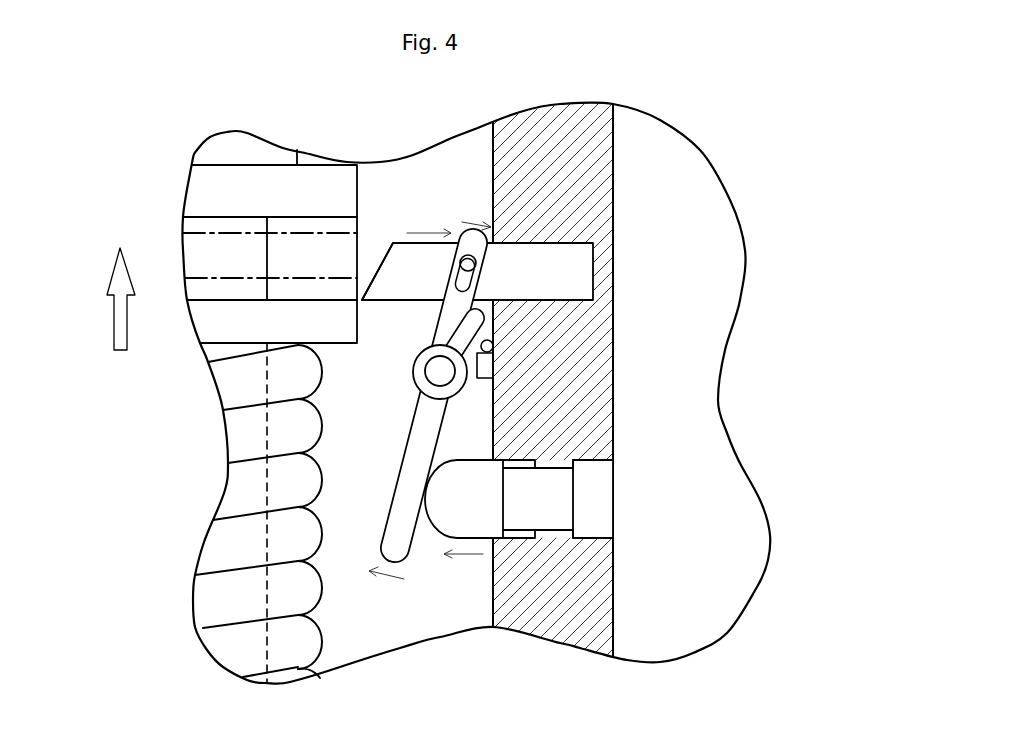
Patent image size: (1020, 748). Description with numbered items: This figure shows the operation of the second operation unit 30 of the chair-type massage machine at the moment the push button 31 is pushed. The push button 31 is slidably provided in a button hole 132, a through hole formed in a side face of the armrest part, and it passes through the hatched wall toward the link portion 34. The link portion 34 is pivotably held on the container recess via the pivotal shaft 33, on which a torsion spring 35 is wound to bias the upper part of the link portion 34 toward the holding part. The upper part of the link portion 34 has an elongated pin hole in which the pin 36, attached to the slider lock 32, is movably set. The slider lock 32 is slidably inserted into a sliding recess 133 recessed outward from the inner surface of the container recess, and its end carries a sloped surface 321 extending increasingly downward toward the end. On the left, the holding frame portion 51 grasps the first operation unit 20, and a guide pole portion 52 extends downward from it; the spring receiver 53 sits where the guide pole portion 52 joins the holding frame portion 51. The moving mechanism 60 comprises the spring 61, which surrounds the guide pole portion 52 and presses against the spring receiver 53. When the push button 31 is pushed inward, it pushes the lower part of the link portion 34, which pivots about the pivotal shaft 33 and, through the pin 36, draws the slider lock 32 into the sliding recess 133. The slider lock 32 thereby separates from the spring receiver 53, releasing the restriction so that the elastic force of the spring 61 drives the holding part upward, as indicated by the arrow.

The first operation unit 20 is at (225, 152).
The holding frame portion 51 is at (215, 200).
The spring receiver 53 is at (227, 270).
The guide pole portion 52 is at (268, 630).
The moving mechanism 60 is at (233, 475).
The spring 61 is at (215, 597).
The second operation unit 30 is at (412, 355).
The sloped surface 321 is at (376, 272).
The slider lock 32 is at (516, 239).
The pivotal shaft 33 is at (435, 370).
The link portion 34 is at (412, 452).
The torsion spring 35 is at (425, 385).
The pin 36 is at (460, 268).
The sliding recess 133 is at (573, 243).
The button hole 132 is at (608, 440).
The push button 31 is at (600, 527).